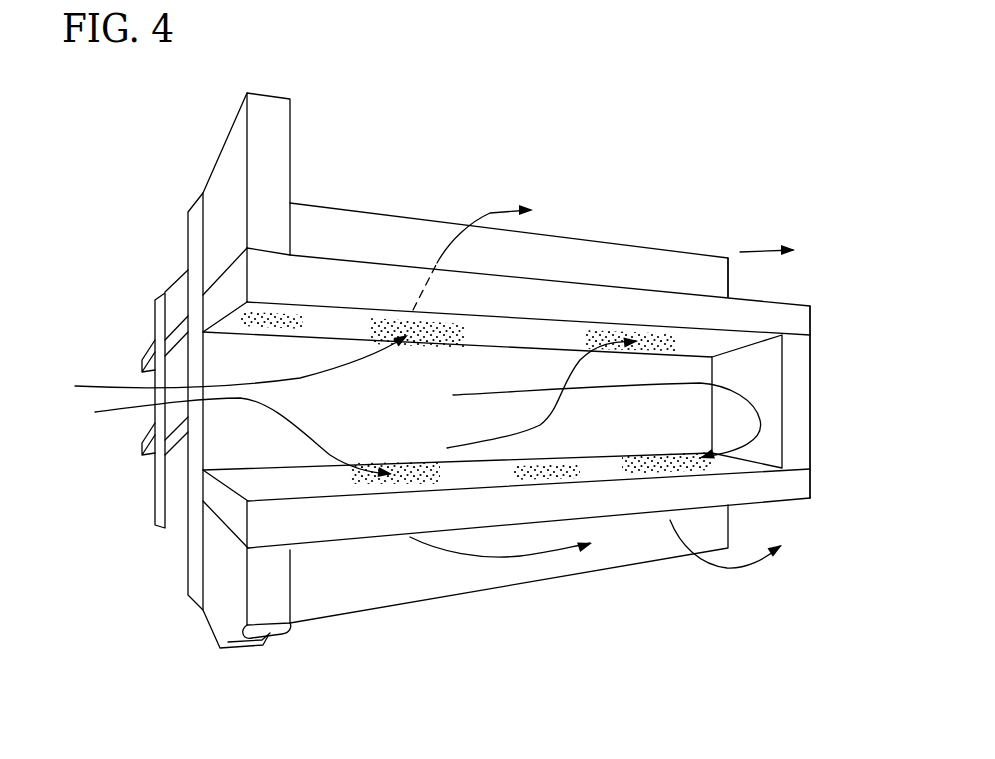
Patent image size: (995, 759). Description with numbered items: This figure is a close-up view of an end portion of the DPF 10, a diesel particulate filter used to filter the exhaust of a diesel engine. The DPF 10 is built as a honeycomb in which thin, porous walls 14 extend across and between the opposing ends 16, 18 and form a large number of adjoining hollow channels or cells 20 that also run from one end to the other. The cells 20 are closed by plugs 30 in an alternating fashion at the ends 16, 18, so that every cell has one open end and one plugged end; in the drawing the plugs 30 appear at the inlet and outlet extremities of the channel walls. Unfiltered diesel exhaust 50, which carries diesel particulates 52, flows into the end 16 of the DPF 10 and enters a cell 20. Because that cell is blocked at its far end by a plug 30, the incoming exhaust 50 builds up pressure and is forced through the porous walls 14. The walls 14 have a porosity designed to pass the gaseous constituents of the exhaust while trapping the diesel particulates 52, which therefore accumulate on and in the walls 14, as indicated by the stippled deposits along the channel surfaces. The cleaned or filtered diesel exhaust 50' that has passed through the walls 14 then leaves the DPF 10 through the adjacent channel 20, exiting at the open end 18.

The DPF 10 is at (727, 165).
The porous walls 14 is at (227, 292).
The end 16 is at (166, 187).
The end 18 is at (828, 448).
The cells 20 is at (247, 448).
The plugs 30 is at (273, 128).
The unfiltered diesel exhaust 50 is at (401, 384).
The filtered diesel exhaust 50' is at (602, 414).
The diesel particulates 52 is at (663, 345).